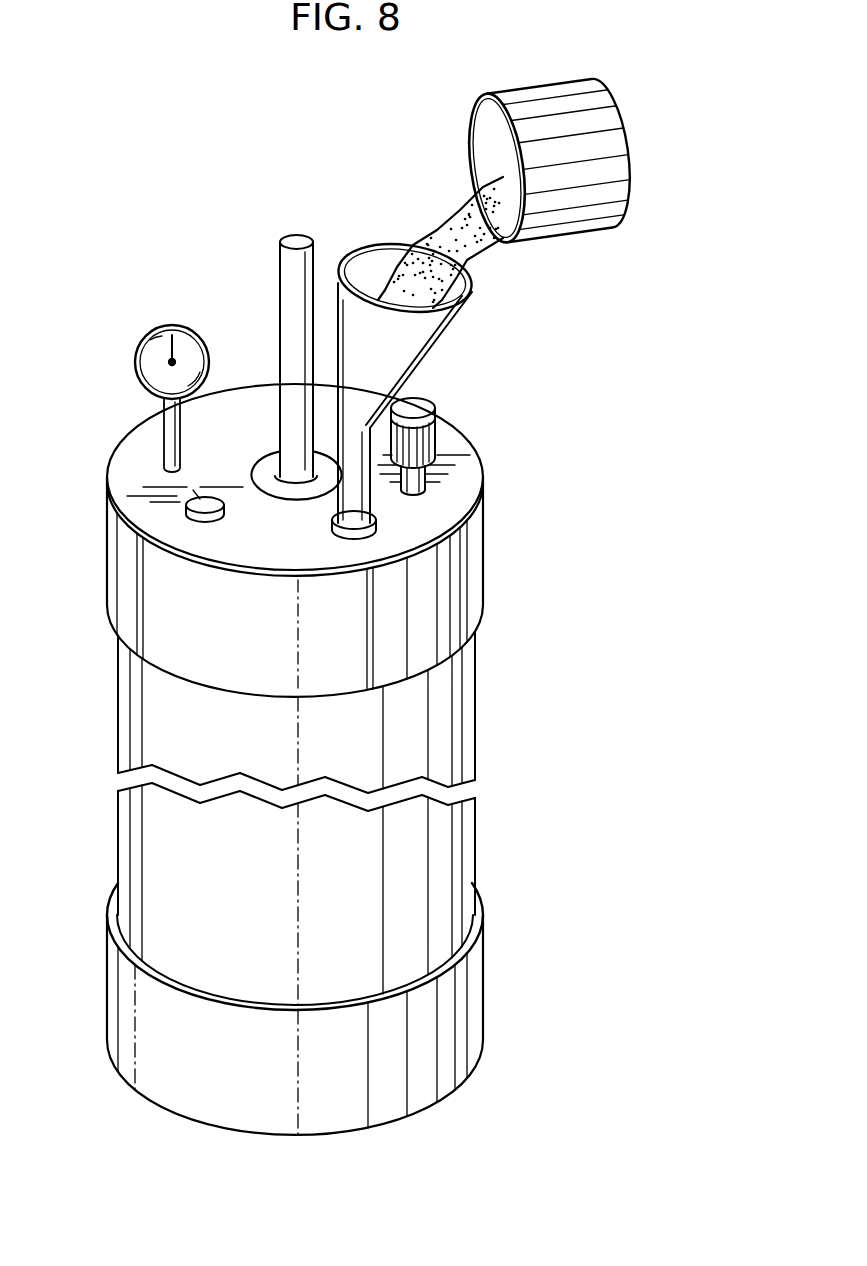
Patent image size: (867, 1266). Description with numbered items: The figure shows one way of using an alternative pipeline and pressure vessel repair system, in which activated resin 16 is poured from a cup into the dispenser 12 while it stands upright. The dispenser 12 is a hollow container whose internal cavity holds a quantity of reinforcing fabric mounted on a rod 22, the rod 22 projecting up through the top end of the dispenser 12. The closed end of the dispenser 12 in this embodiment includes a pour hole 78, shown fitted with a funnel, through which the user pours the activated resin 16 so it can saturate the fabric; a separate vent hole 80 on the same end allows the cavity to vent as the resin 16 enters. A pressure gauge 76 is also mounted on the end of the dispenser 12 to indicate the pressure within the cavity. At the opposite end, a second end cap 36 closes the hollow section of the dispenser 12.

The dispenser 12 is at (441, 897).
The resin 16 is at (605, 123).
The rod 22 is at (283, 272).
The second end cap 36 is at (127, 1013).
The pressure gauge 76 is at (165, 330).
The pour hole 78 is at (387, 527).
The vent hole 80 is at (198, 505).